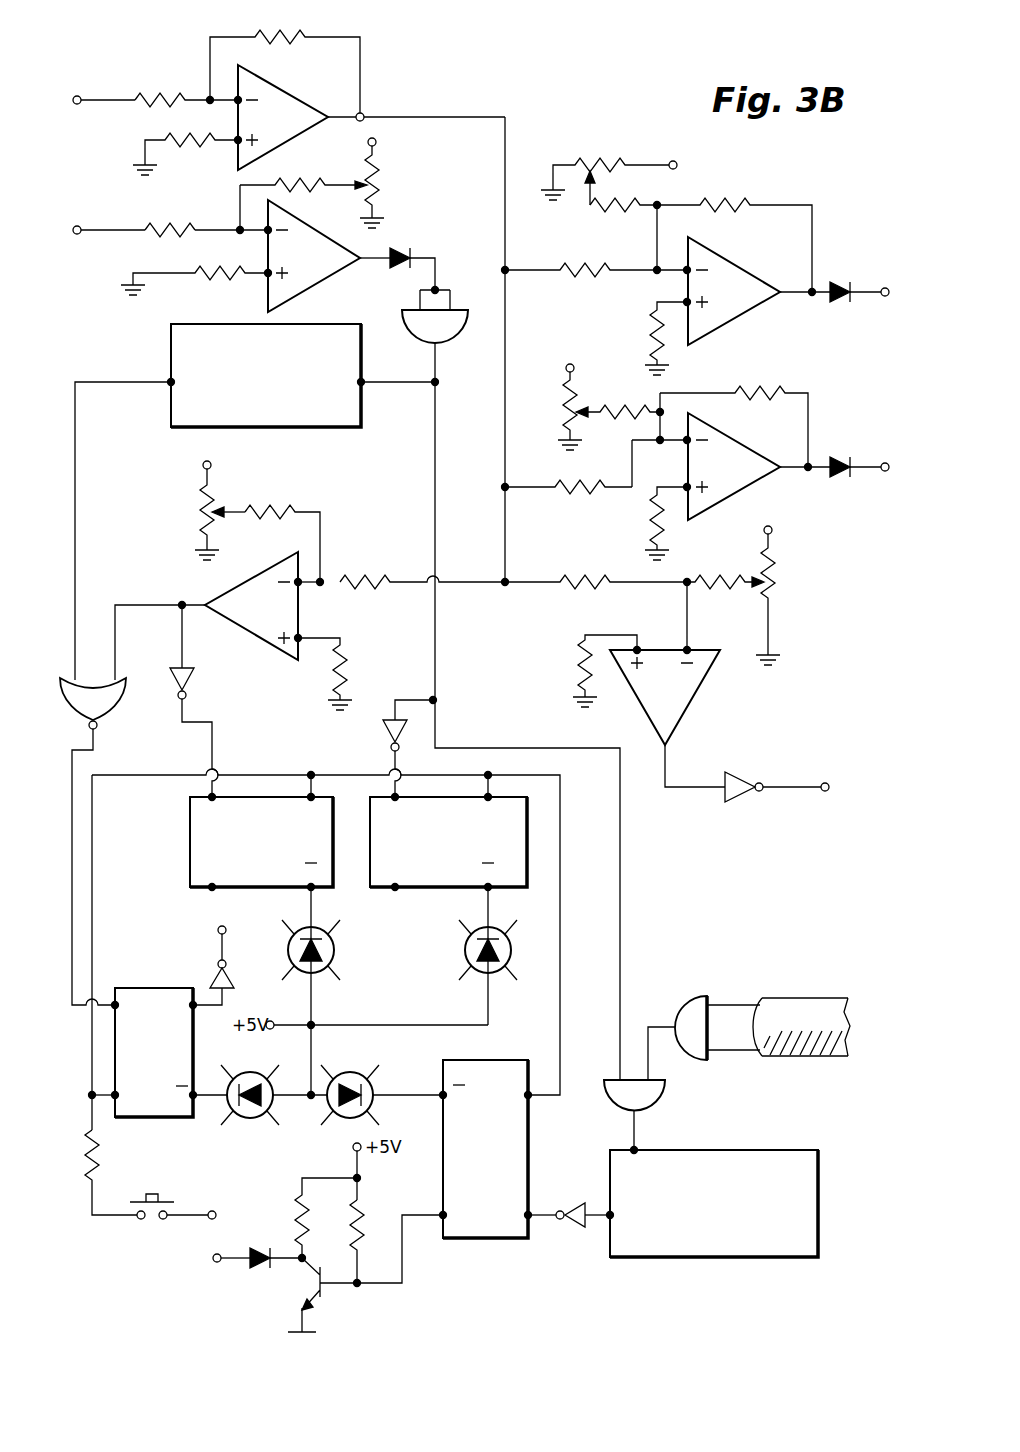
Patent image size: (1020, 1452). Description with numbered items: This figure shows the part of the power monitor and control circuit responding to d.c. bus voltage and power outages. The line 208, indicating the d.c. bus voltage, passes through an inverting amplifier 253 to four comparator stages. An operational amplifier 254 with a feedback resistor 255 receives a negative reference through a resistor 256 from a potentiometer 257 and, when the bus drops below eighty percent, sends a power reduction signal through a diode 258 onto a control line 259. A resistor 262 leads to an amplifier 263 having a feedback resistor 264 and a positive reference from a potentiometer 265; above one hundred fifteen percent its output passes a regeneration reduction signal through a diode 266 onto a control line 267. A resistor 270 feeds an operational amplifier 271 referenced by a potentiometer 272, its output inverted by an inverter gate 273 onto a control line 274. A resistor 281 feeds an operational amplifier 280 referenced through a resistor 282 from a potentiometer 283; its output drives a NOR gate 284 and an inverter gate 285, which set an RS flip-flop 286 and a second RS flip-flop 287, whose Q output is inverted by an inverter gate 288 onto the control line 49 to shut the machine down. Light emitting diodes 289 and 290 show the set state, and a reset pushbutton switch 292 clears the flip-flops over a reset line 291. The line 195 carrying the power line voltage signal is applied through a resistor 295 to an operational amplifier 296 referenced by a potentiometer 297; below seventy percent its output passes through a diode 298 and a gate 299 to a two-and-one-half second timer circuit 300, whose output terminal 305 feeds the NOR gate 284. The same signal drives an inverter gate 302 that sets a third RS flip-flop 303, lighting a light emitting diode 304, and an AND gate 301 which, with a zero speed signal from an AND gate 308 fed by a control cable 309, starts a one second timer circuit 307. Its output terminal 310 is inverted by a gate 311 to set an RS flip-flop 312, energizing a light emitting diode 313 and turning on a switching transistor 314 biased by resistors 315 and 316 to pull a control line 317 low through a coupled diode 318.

The line 208 is at (77, 104).
The line 195 is at (77, 226).
The inverting amplifier 253 is at (308, 128).
The resistor 295 is at (175, 228).
The operational amplifier 296 is at (333, 268).
The potentiometer 297 is at (385, 185).
The diode 298 is at (390, 264).
The gate 299 is at (450, 338).
The 2.5 second timer circuit 300 is at (171, 344).
The output terminal 305 is at (171, 382).
The potentiometer 283 is at (218, 512).
The resistor 282 is at (286, 510).
The operational amplifier 280 is at (273, 615).
The resistor 281 is at (378, 592).
The inverter gate 285 is at (196, 682).
The NOR gate 284 is at (100, 724).
The reset line 291 is at (105, 778).
The inverter gate 302 is at (383, 735).
The RS flip-flop 286 is at (279, 852).
The third RS flip-flop 303 is at (464, 852).
The light emitting diode 289 is at (335, 950).
The light emitting diode 304 is at (470, 940).
The control line 49 is at (218, 927).
The inverter gate 288 is at (212, 974).
The second RS flip-flop 287 is at (168, 1058).
The light emitting diode 290 is at (248, 1120).
The light emitting diode 313 is at (348, 1072).
The reset pushbutton switch 292 is at (149, 1200).
The RS flip-flop 312 is at (502, 1162).
The resistor 316 is at (300, 1200).
The resistor 315 is at (362, 1240).
The control line 317 is at (216, 1263).
The coupled diode 318 is at (262, 1270).
The switching transistor 314 is at (326, 1290).
The gate 311 is at (575, 1228).
The output terminal 310 is at (607, 1222).
The one second timer circuit 307 is at (770, 1258).
The AND gate 301 is at (662, 1098).
The AND gate 308 is at (686, 998).
The control cable 309 is at (778, 1058).
The potentiometer 257 is at (605, 162).
The resistor 256 is at (622, 212).
The feedback resistor 255 is at (742, 210).
The operational amplifier 254 is at (750, 302).
The diode 258 is at (838, 302).
The control line 259 is at (882, 288).
The potentiometer 265 is at (575, 410).
The feedback resistor 264 is at (745, 392).
The amplifier 263 is at (750, 477).
The resistor 262 is at (570, 492).
The diode 266 is at (832, 478).
The control line 267 is at (883, 463).
The resistor 270 is at (562, 590).
The potentiometer 272 is at (775, 590).
The operational amplifier 271 is at (681, 704).
The inverter gate 273 is at (736, 800).
The control line 274 is at (825, 792).